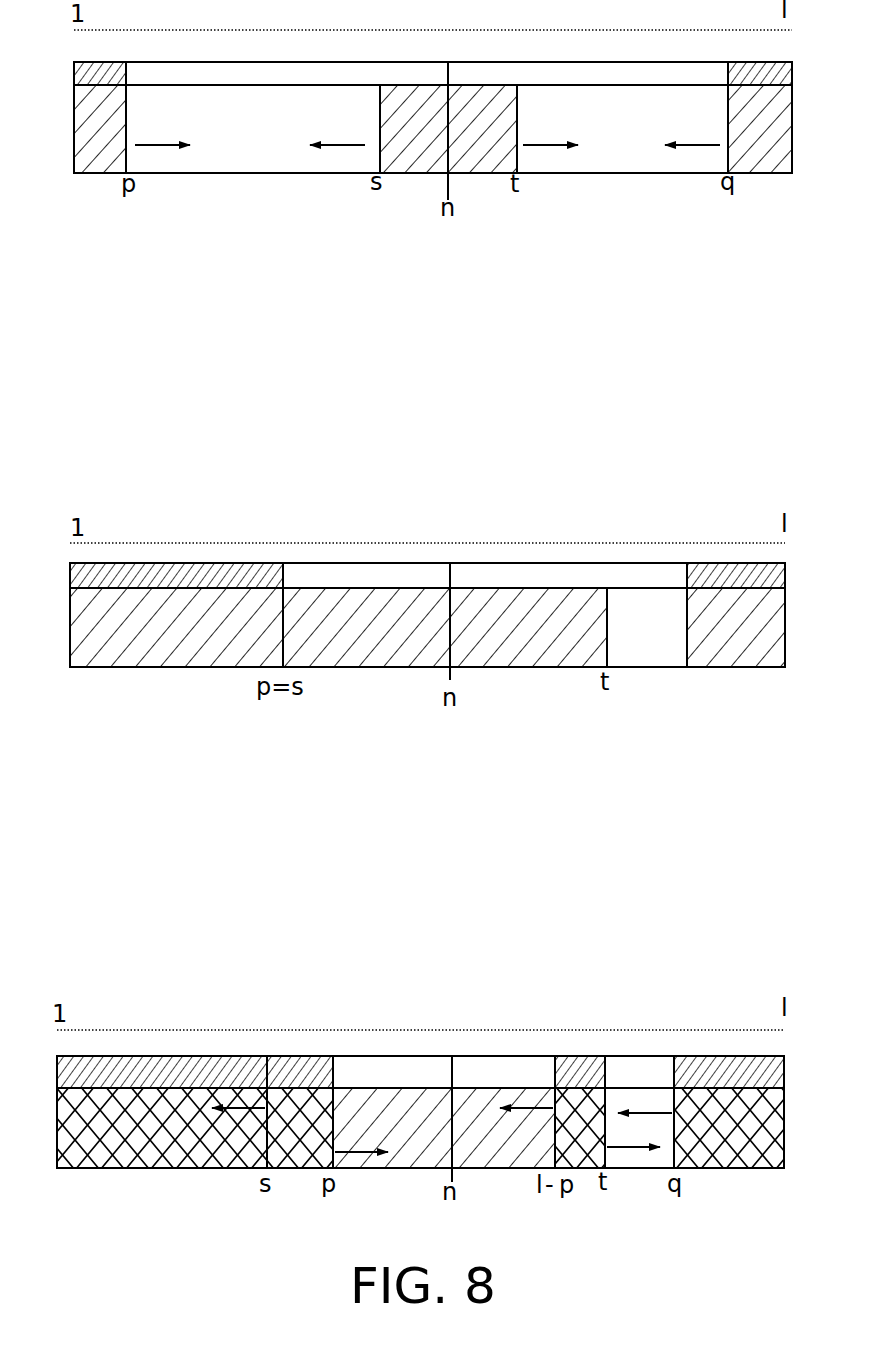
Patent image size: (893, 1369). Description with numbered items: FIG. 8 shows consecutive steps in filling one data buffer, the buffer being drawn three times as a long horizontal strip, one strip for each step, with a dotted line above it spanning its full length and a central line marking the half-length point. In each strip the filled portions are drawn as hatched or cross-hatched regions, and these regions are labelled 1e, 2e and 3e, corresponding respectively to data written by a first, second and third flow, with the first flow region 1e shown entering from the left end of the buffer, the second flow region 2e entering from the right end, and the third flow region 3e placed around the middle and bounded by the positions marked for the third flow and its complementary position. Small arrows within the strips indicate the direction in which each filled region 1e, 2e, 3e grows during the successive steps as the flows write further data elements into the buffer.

The first element 1e is at (97, 155).
The second element 2e is at (750, 153).
The third element 3e is at (400, 150).